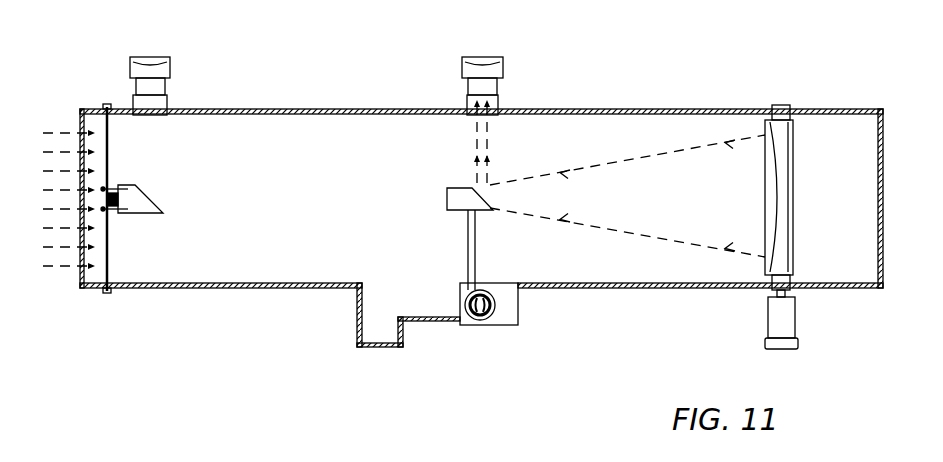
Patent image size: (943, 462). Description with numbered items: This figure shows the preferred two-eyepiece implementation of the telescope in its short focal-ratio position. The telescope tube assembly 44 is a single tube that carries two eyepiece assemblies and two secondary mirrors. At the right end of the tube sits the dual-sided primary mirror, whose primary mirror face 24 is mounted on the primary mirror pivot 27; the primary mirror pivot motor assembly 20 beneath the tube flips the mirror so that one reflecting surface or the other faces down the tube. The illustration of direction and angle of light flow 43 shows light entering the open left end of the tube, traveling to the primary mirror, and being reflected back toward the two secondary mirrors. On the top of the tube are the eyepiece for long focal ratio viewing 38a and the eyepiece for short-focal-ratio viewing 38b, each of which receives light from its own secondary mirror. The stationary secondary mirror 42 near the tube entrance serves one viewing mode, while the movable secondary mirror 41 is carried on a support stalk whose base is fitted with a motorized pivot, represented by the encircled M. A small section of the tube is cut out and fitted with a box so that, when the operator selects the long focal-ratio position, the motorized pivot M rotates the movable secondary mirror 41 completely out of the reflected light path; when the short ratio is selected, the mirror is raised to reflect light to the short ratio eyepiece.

The eyepiece for long focal ratio viewing 38a is at (130, 60).
The eyepiece for short-focal-ratio viewing 38b is at (133, 100).
The illustration of direction and angle of light flow 43 is at (650, 160).
The stationary secondary mirror 42 is at (140, 207).
The movable secondary mirror 41 is at (458, 202).
The telescope tube assembly 44 is at (600, 288).
The motorized pivot M is at (500, 307).
The primary mirror pivot 27 is at (788, 113).
The primary mirror face 24 is at (787, 175).
The primary mirror pivot motor assembly 20 is at (790, 323).